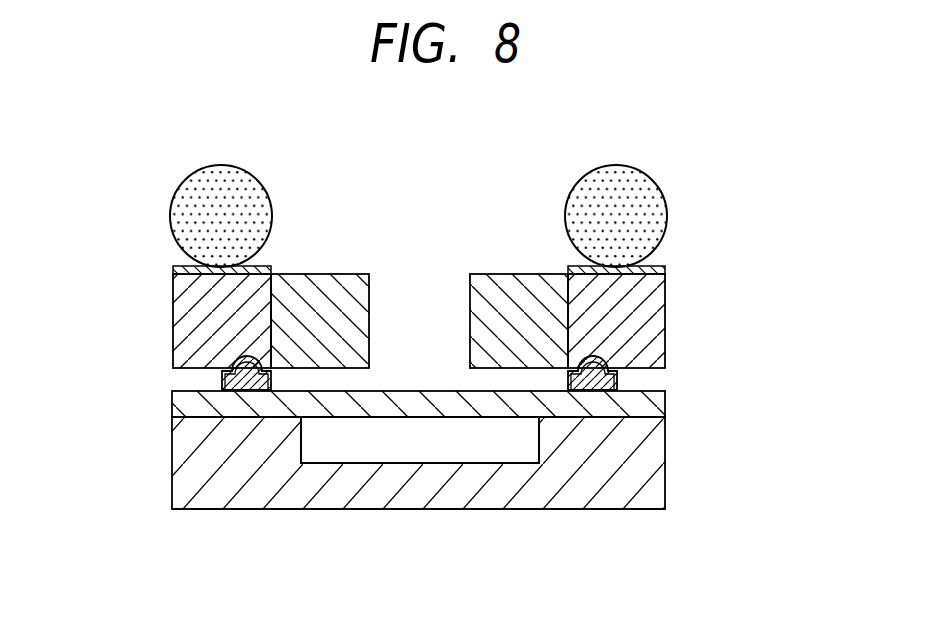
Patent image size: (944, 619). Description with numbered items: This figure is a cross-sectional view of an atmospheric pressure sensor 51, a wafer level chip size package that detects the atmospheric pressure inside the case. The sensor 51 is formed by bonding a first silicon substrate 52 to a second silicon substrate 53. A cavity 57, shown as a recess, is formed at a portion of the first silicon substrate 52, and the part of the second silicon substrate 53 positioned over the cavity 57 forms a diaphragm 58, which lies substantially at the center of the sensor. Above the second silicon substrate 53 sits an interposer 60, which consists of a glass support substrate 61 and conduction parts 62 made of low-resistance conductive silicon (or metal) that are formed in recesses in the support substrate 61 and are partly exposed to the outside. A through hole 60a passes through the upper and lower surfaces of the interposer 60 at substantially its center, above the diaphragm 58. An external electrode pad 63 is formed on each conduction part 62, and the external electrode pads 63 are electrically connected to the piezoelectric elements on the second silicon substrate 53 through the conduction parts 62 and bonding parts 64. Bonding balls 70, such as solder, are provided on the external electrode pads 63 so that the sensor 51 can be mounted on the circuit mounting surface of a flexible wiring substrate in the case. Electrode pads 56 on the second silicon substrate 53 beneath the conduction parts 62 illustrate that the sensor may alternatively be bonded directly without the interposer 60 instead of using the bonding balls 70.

The atmospheric pressure sensor 51 is at (167, 97).
The first silicon substrate 52 is at (660, 463).
The second silicon substrate 53 is at (667, 402).
The electrode pads 56 is at (222, 383).
The cavity 57 is at (450, 447).
The diaphragm 58 is at (379, 410).
The interposer 60 is at (694, 342).
The through hole 60a is at (420, 338).
The support substrate 61 is at (339, 290).
The conduction parts 62 is at (173, 303).
The external electrode pad 63 is at (173, 268).
The bonding parts 64 is at (265, 388).
The bonding balls 70 is at (221, 166).